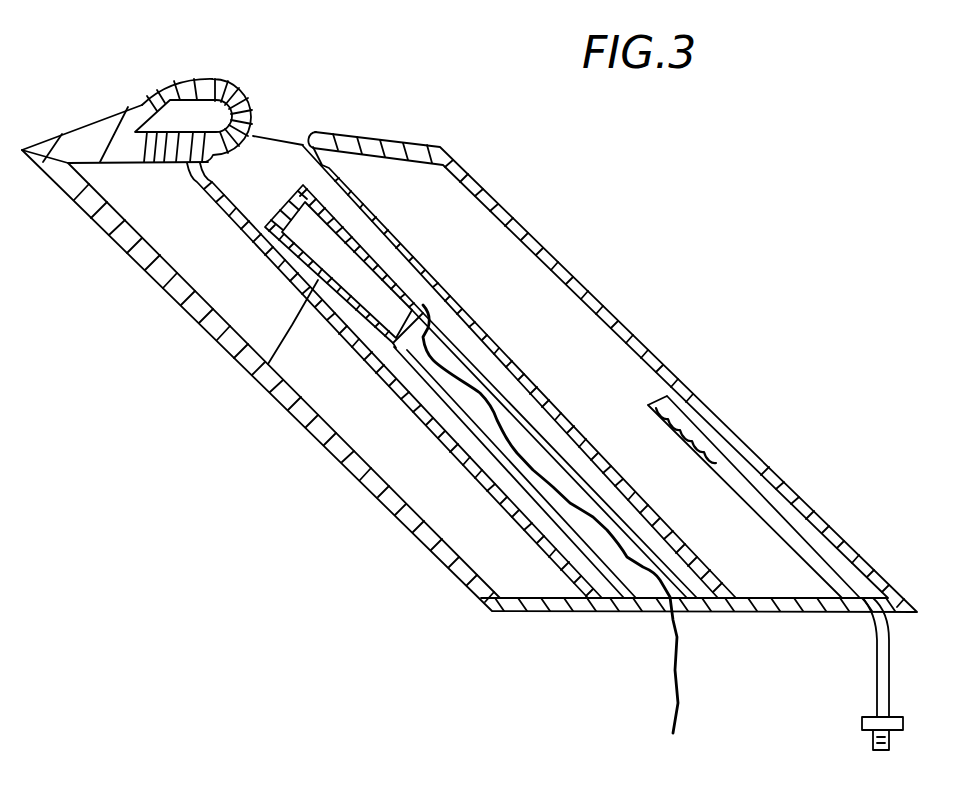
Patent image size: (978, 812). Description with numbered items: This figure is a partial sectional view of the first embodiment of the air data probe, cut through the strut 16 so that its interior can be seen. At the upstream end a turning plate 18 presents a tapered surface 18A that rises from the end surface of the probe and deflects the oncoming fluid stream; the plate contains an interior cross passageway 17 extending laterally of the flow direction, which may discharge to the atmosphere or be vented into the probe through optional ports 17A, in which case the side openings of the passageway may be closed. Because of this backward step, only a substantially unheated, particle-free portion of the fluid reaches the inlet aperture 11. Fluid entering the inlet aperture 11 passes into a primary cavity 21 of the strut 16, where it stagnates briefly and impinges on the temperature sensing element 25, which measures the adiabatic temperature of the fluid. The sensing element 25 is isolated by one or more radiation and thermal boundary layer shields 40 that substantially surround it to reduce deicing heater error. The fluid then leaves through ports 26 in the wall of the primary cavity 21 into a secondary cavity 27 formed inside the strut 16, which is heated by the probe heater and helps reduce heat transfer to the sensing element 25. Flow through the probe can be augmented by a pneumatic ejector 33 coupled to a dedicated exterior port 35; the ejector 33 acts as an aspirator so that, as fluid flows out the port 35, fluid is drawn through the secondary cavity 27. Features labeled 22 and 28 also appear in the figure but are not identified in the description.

The inlet aperture 11 is at (296, 128).
The strut 16 is at (641, 341).
The interior cross passageway 17 is at (184, 120).
The optional ports 17A is at (143, 163).
The turning plate 18 is at (133, 100).
The tapered surface 18A is at (193, 78).
The primary cavity 21 is at (265, 199).
The insulation 22 is at (250, 106).
The temperature sensing element 25 is at (387, 304).
The ports 26 is at (636, 417).
The secondary cavity 27 is at (252, 299).
The wire 28 is at (682, 668).
The pneumatic ejector 33 is at (873, 680).
The dedicated exterior port 35 is at (724, 398).
The protective shielding 40 is at (259, 386).